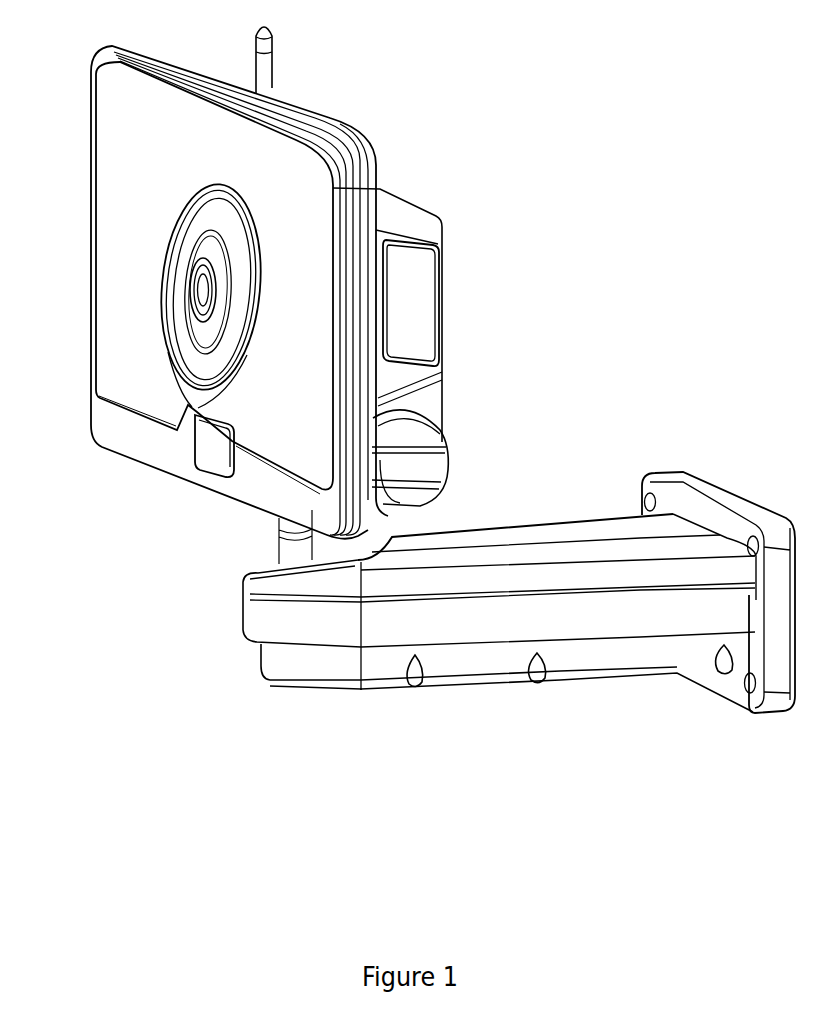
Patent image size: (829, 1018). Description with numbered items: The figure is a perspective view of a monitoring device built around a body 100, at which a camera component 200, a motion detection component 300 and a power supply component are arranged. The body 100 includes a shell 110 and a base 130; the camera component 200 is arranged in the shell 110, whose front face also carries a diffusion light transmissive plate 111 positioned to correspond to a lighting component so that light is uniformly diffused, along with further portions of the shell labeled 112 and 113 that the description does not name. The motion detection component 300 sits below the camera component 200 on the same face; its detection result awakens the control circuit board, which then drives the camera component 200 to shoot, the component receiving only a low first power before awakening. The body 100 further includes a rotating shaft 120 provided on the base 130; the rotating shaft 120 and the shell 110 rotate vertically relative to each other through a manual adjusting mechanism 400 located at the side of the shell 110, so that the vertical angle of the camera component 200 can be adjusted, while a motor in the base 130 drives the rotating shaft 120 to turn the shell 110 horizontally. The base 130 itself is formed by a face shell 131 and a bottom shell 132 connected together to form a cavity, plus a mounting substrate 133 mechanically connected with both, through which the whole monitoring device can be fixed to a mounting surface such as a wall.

The body 100 is at (411, 451).
The shell 110 is at (287, 412).
The diffusion light transmissive plate 111 is at (127, 168).
The side window 112 is at (420, 302).
The lower housing portion 113 is at (287, 496).
The rotating shaft 120 is at (343, 560).
The base 130 is at (576, 644).
The face shell 131 is at (463, 657).
The bottom shell 132 is at (606, 620).
The mounting substrate 133 is at (718, 619).
The camera component 200 is at (200, 252).
The motion detection component 300 is at (207, 450).
The manual adjusting mechanism 400 is at (423, 465).